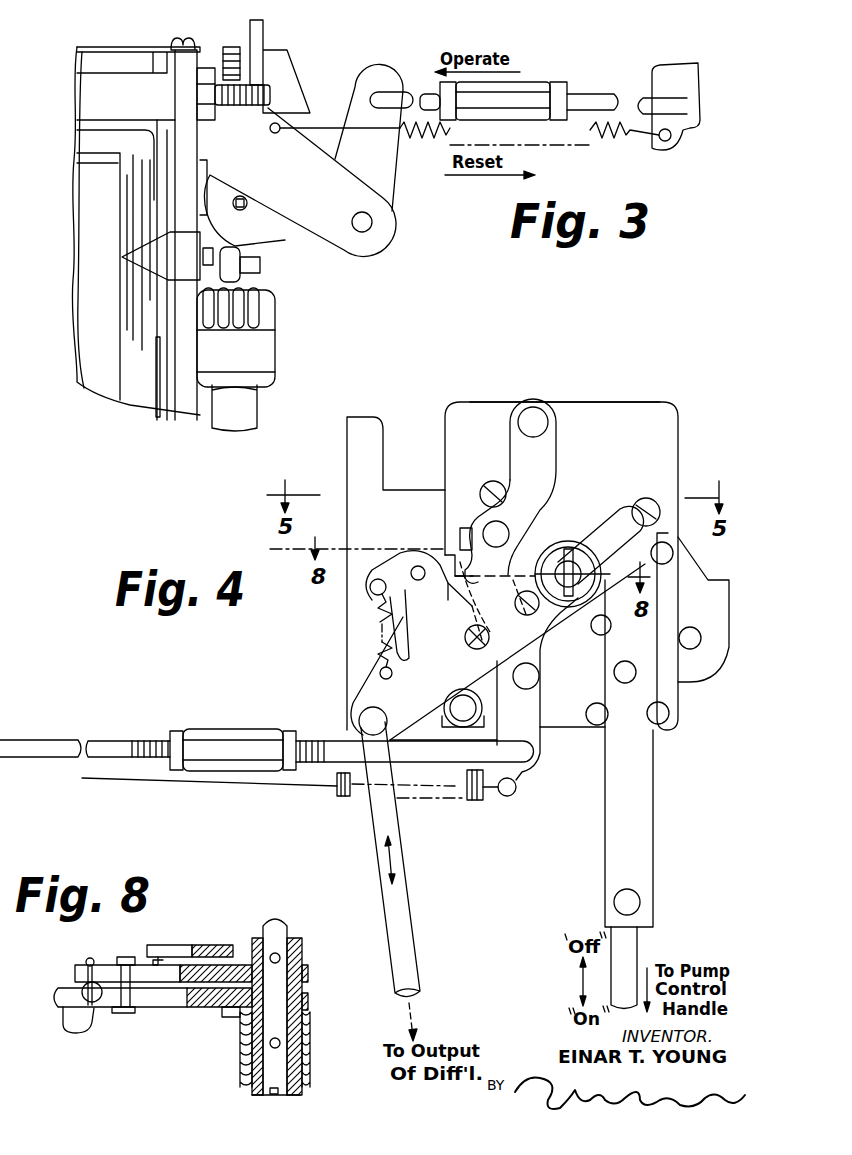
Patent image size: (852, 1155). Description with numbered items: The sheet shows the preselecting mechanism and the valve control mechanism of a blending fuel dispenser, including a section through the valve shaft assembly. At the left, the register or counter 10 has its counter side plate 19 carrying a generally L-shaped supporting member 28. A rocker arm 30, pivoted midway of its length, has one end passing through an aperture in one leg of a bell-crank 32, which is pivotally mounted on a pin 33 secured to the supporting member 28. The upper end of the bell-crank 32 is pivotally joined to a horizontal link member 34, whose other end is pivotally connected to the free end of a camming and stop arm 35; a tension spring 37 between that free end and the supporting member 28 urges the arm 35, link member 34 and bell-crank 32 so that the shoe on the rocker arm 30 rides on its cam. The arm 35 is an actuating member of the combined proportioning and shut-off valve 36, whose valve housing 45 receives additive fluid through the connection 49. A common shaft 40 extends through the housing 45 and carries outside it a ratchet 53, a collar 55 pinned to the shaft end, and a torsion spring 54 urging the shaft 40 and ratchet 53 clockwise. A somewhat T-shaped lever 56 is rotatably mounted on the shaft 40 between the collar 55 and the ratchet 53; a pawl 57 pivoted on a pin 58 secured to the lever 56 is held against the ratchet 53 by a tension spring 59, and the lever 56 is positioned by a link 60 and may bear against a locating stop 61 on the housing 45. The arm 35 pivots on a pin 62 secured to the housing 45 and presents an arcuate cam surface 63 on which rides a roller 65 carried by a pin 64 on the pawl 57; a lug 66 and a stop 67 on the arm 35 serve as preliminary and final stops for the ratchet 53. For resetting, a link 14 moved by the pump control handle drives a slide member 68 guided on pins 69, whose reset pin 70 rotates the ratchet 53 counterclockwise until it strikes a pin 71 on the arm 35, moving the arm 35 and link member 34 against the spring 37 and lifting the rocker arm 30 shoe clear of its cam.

In FIG. 3, the register or counter 10 is at (150, 48).
In FIG. 3, the counter side plate 19 is at (193, 60).
In FIG. 3, the supporting member 28 is at (312, 195).
In FIG. 3, the rocker arm 30 is at (246, 208).
In FIG. 3, the bell-crank 32 is at (378, 82).
In FIG. 3, the pin 33 is at (364, 226).
In FIG. 3, the link member 34 is at (537, 88).
In FIG. 4, the link member 34 is at (130, 740).
In FIG. 3, the camming and stop arm 35 is at (694, 80).
In FIG. 4, the camming and stop arm 35 is at (558, 461).
In FIG. 8, the camming and stop arm 35 is at (208, 945).
In FIG. 3, the tension spring 37 is at (598, 140).
In FIG. 4, the tension spring 37 is at (350, 800).
In FIG. 4, the combined proportioning and shut-off valve 36 is at (634, 398).
In FIG. 4, the valve housing 45 is at (568, 402).
In FIG. 4, the pin 62 is at (531, 418).
In FIG. 4, the lug 66 is at (466, 528).
In FIG. 4, the stop 67 is at (500, 530).
In FIG. 4, the cam surface 63 is at (473, 578).
In FIG. 4, the ratchet 53 is at (540, 550).
In FIG. 8, the ratchet 53 is at (243, 963).
In FIG. 4, the torsion spring 54 is at (567, 551).
In FIG. 8, the torsion spring 54 is at (307, 1037).
In FIG. 4, the collar 55 is at (582, 560).
In FIG. 8, the collar 55 is at (297, 1092).
In FIG. 4, the shaft 40 is at (580, 594).
In FIG. 8, the shaft 40 is at (288, 927).
In FIG. 4, the pawl 57 is at (395, 565).
In FIG. 8, the pawl 57 is at (103, 968).
In FIG. 4, the pin 58 is at (419, 566).
In FIG. 8, the pin 58 is at (128, 1012).
In FIG. 4, the tension spring 59 is at (375, 641).
In FIG. 8, the tension spring 59 is at (97, 1005).
In FIG. 4, the connection 49 is at (347, 613).
In FIG. 4, the lever 56 is at (449, 648).
In FIG. 8, the lever 56 is at (202, 1007).
In FIG. 4, the roller 65 is at (470, 628).
In FIG. 8, the roller 65 is at (168, 945).
In FIG. 4, the locating stop 61 is at (466, 708).
In FIG. 4, the pin 71 is at (530, 677).
In FIG. 4, the slide member 68 is at (658, 617).
In FIG. 4, the pins 69 is at (665, 556).
In FIG. 4, the reset pin 70 is at (630, 670).
In FIG. 4, the link 60 is at (403, 907).
In FIG. 8, the link 60 is at (73, 1023).
In FIG. 4, the link 14 is at (633, 945).
In FIG. 8, the pin 64 is at (157, 963).